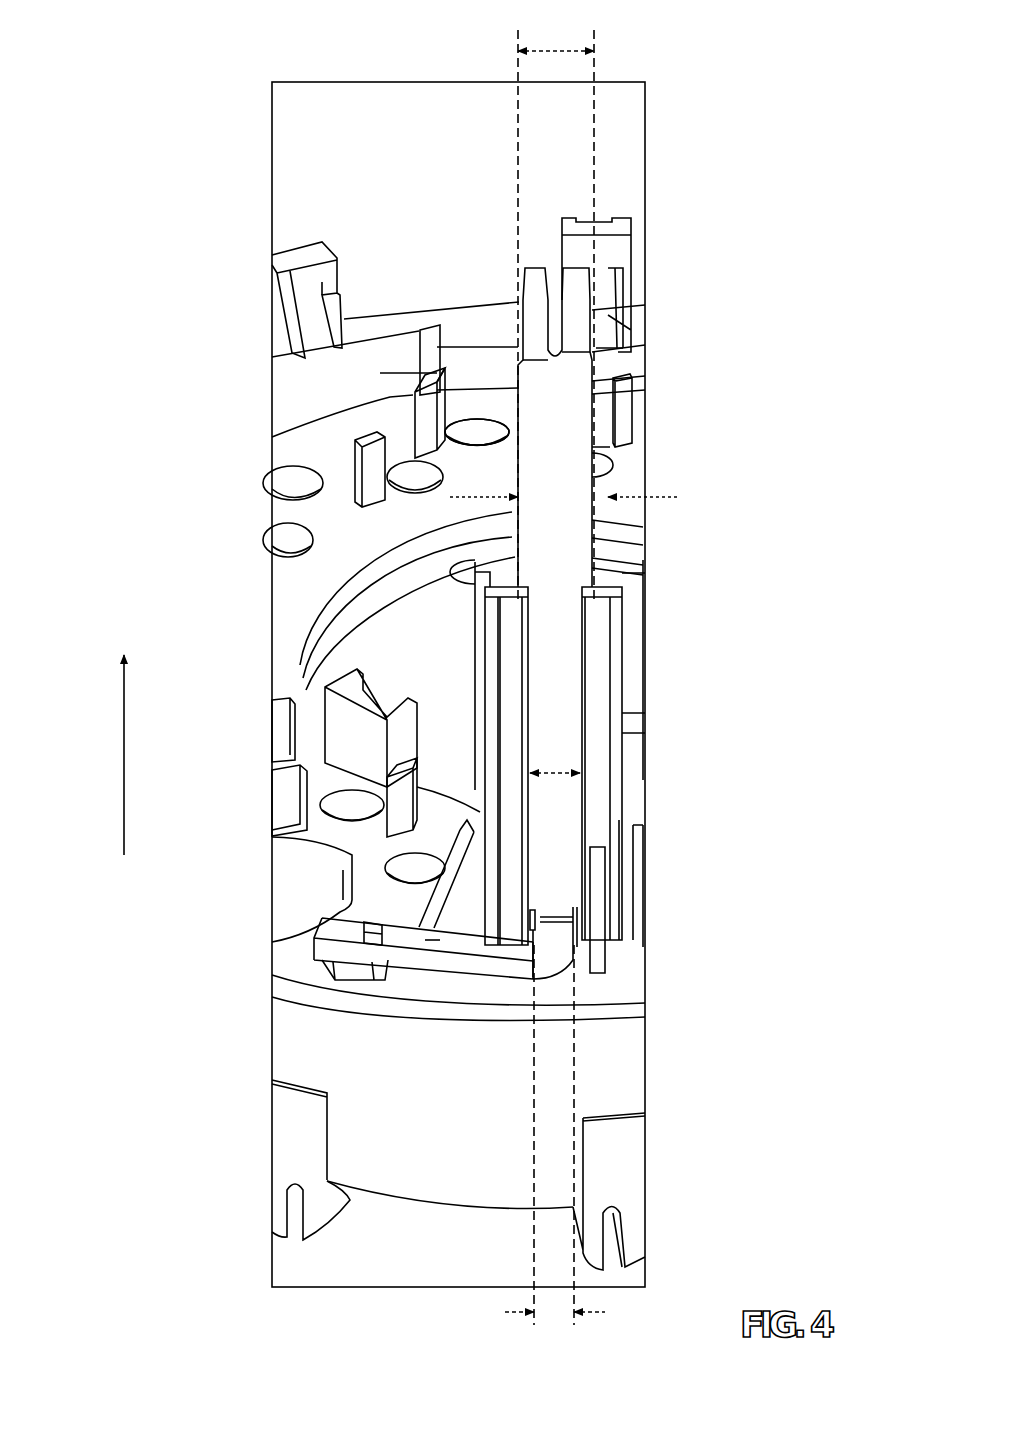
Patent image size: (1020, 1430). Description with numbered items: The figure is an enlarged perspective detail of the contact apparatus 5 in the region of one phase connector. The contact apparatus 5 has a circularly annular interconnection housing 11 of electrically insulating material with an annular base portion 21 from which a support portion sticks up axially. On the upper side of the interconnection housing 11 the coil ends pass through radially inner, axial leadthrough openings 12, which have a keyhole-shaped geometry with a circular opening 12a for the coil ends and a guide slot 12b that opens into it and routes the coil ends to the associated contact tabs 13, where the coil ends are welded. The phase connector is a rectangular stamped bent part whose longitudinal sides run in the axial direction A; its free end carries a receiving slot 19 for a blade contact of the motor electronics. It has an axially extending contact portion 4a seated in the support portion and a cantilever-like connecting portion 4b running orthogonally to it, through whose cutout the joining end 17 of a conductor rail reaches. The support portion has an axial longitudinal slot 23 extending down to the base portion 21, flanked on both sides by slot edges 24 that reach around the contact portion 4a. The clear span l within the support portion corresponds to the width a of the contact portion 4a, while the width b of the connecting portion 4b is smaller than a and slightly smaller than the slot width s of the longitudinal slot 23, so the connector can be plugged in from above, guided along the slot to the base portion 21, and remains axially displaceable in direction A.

The contact portion 4a is at (560, 437).
The connecting portion 4b is at (432, 945).
The contact apparatus 5 is at (376, 1122).
The interconnection housing 11 is at (305, 1033).
The leadthrough openings 12 is at (477, 430).
The circular opening 12a is at (477, 438).
The guide slot 12b is at (440, 440).
The contact tabs 13 is at (413, 413).
The joining end 17 is at (372, 973).
The receiving slot 19 is at (555, 327).
The base portion 21 is at (304, 967).
The longitudinal slot 23 is at (577, 934).
The slot edges 24 is at (512, 656).
The width of the contact portion a is at (556, 50).
The width of the connecting portion b is at (552, 1316).
The slot width s is at (556, 773).
The clear span l is at (680, 497).
The axial direction A is at (124, 752).